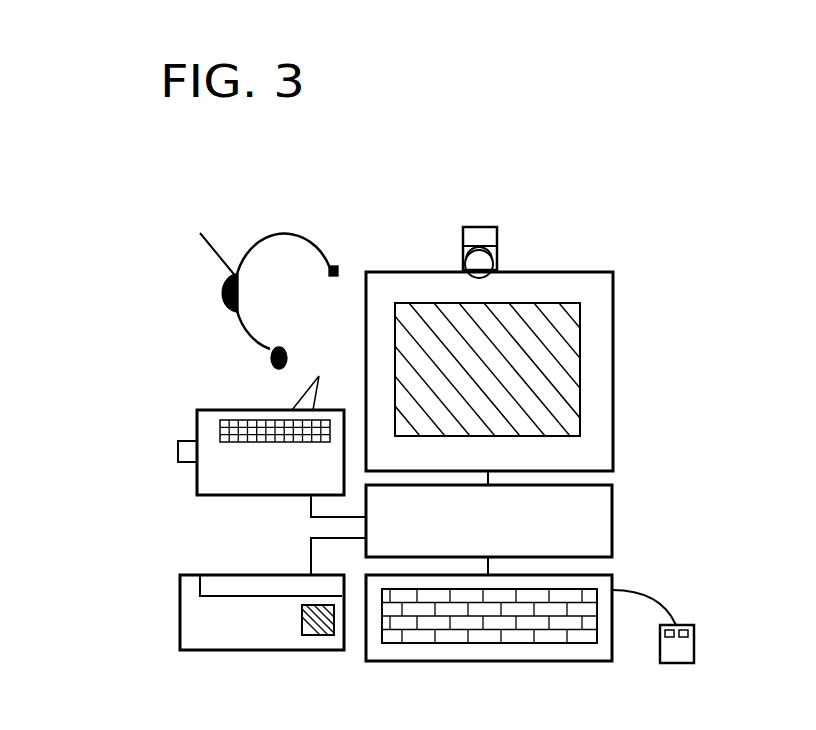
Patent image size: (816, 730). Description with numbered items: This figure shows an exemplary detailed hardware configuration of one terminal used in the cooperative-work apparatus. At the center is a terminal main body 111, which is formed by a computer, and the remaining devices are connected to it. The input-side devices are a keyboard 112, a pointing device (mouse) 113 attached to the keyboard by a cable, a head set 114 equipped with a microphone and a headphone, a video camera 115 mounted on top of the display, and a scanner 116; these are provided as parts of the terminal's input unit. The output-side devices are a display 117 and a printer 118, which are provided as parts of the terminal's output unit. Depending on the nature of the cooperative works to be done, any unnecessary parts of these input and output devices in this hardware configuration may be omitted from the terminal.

The terminal main body 111 is at (604, 507).
The keyboard 112 is at (612, 583).
The pointing device (mouse) 113 is at (690, 648).
The head set 114 is at (313, 247).
The video camera 115 is at (497, 243).
The scanner 116 is at (180, 603).
The display 117 is at (604, 360).
The printer 118 is at (216, 410).